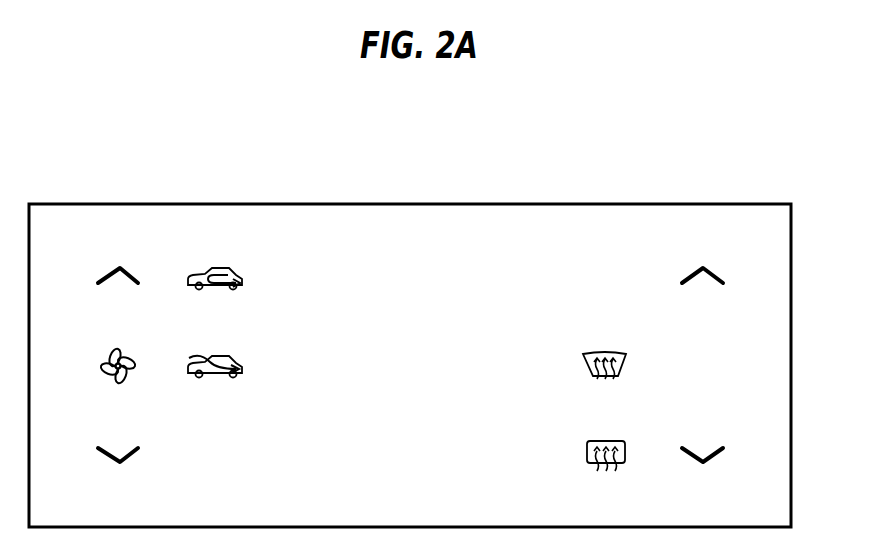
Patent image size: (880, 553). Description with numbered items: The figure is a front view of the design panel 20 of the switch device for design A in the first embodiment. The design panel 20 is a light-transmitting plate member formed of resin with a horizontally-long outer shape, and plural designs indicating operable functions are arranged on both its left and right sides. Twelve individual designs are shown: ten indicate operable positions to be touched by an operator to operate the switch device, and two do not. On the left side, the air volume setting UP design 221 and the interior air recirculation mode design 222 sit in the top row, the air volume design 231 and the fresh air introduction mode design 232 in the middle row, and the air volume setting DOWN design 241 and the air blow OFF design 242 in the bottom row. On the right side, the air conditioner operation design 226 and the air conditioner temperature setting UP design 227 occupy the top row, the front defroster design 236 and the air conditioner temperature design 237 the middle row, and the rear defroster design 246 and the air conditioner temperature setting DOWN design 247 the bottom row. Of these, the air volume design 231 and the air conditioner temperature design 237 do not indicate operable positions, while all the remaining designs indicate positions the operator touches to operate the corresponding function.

The design panel 20 is at (713, 204).
The air volume setting UP design 221 is at (128, 273).
The interior air recirculation mode design 222 is at (232, 277).
The air volume design 231 is at (130, 355).
The fresh air introduction mode design 232 is at (232, 353).
The air volume setting DOWN design 241 is at (130, 450).
The air blow OFF design 242 is at (223, 445).
The air conditioner operation design 226 is at (620, 267).
The air conditioner temperature setting UP design 227 is at (713, 273).
The front defroster design 236 is at (617, 353).
The air conditioner temperature design 237 is at (707, 355).
The rear defroster design 246 is at (608, 445).
The air conditioner temperature setting DOWN design 247 is at (717, 443).